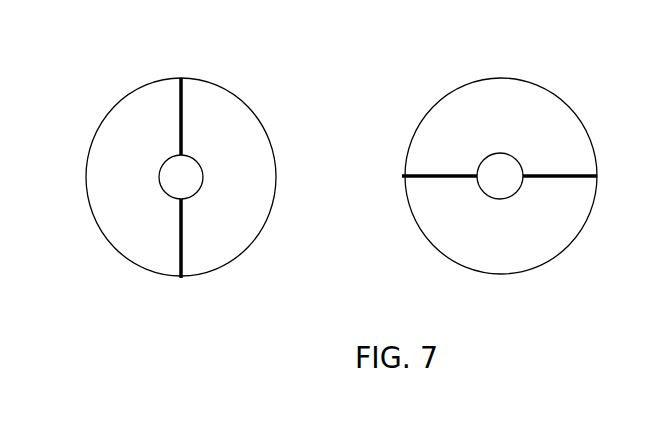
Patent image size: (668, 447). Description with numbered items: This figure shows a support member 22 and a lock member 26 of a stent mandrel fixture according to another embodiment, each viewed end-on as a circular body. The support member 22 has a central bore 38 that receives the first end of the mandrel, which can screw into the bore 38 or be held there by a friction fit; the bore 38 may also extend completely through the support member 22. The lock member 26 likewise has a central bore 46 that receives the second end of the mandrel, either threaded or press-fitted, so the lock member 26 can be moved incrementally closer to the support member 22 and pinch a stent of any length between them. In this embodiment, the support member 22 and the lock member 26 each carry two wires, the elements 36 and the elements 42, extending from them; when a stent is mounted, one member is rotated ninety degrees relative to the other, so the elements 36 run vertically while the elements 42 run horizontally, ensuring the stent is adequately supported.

The support member 22 is at (233, 258).
The elements 36 is at (183, 103).
The bore 38 is at (181, 177).
The lock member 26 is at (553, 257).
The elements 42 is at (452, 175).
The bore 46 is at (500, 176).